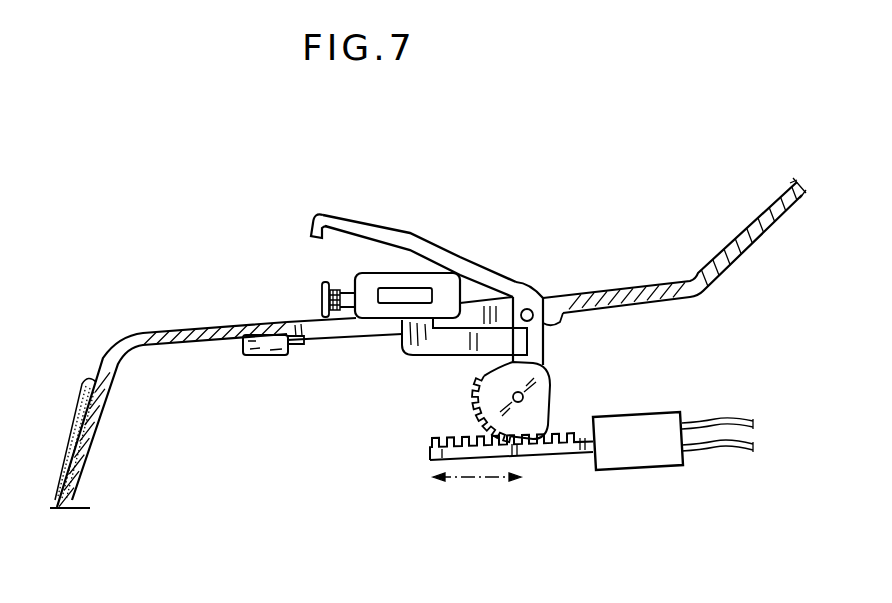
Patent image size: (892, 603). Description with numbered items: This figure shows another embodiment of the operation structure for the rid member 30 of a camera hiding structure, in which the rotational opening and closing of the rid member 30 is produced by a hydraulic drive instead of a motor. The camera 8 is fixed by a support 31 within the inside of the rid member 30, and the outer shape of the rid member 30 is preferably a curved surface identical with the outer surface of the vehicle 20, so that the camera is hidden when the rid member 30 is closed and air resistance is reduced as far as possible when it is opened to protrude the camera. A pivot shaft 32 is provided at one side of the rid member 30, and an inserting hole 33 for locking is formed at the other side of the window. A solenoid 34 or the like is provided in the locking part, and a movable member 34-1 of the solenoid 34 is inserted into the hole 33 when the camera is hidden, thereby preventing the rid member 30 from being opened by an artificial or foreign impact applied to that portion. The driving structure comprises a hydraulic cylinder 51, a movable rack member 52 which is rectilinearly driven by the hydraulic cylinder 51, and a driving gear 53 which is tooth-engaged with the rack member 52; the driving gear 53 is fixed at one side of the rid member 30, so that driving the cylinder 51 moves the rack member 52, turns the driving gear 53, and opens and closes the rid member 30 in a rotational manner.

The camera 8 is at (365, 283).
The vehicle 20 is at (143, 334).
The rid member 30 is at (423, 243).
The support 31 is at (427, 350).
The pivot shaft 32 is at (527, 297).
The inserting hole 33 is at (311, 223).
The solenoid 34 is at (243, 343).
The movable member 34-1 is at (303, 348).
The hydraulic cylinder 51 is at (633, 458).
The movable rack member 52 is at (537, 453).
The driving gear 53 is at (537, 410).